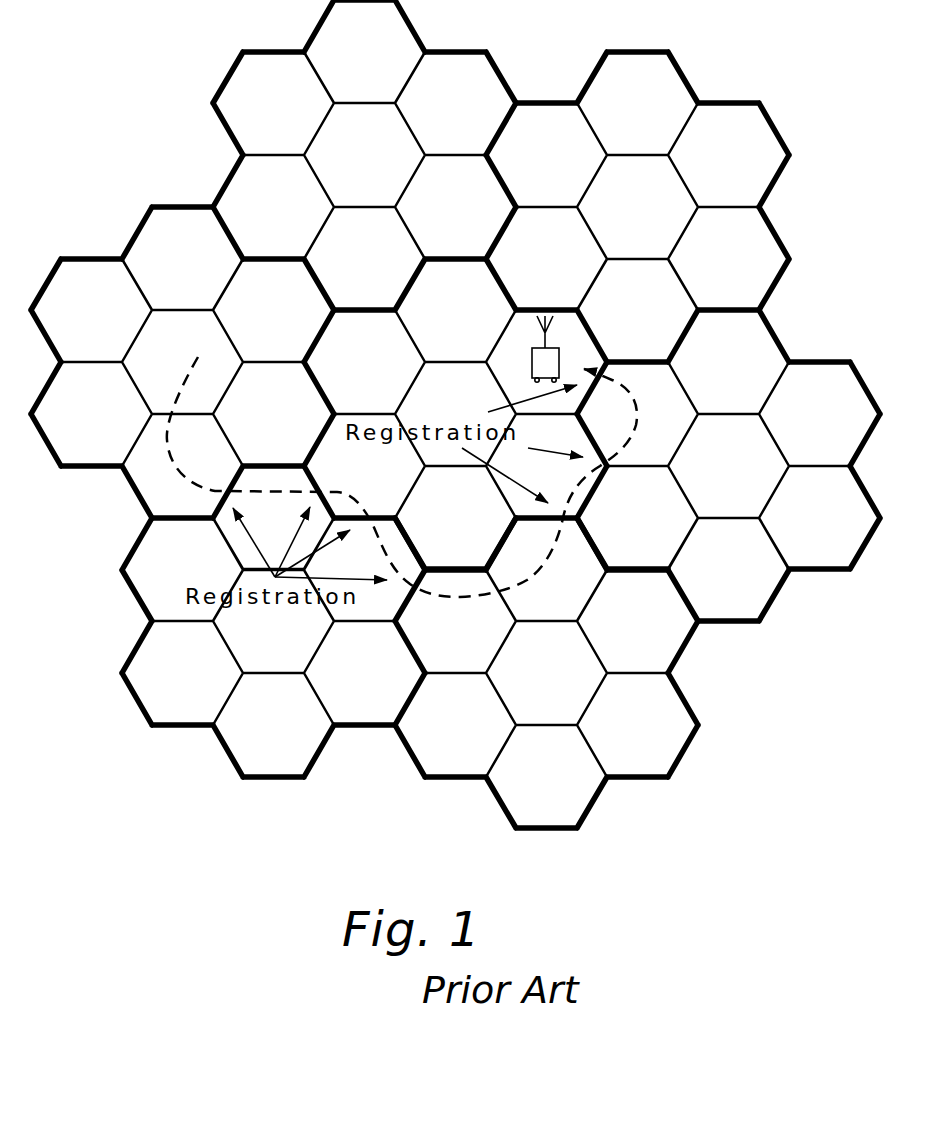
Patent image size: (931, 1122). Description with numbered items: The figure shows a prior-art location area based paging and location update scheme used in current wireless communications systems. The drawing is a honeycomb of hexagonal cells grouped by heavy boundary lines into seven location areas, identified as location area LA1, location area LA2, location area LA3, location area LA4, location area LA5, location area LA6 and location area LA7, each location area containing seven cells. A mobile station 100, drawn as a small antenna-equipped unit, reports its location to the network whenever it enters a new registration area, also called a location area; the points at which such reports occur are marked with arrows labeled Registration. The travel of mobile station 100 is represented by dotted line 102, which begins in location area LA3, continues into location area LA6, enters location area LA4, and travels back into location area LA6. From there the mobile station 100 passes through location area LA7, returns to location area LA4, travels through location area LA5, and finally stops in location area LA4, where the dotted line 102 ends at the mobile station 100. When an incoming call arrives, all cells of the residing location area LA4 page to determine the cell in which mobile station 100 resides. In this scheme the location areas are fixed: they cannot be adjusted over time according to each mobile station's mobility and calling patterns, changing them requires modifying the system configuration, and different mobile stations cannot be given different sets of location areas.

The mobile station 100 is at (532, 350).
The dotted line 102 is at (473, 596).
The location area LA1 is at (364, 155).
The location area LA2 is at (637, 207).
The location area LA3 is at (182, 362).
The location area LA4 is at (455, 432).
The location area LA5 is at (728, 465).
The location area LA6 is at (273, 647).
The location area LA7 is at (546, 673).